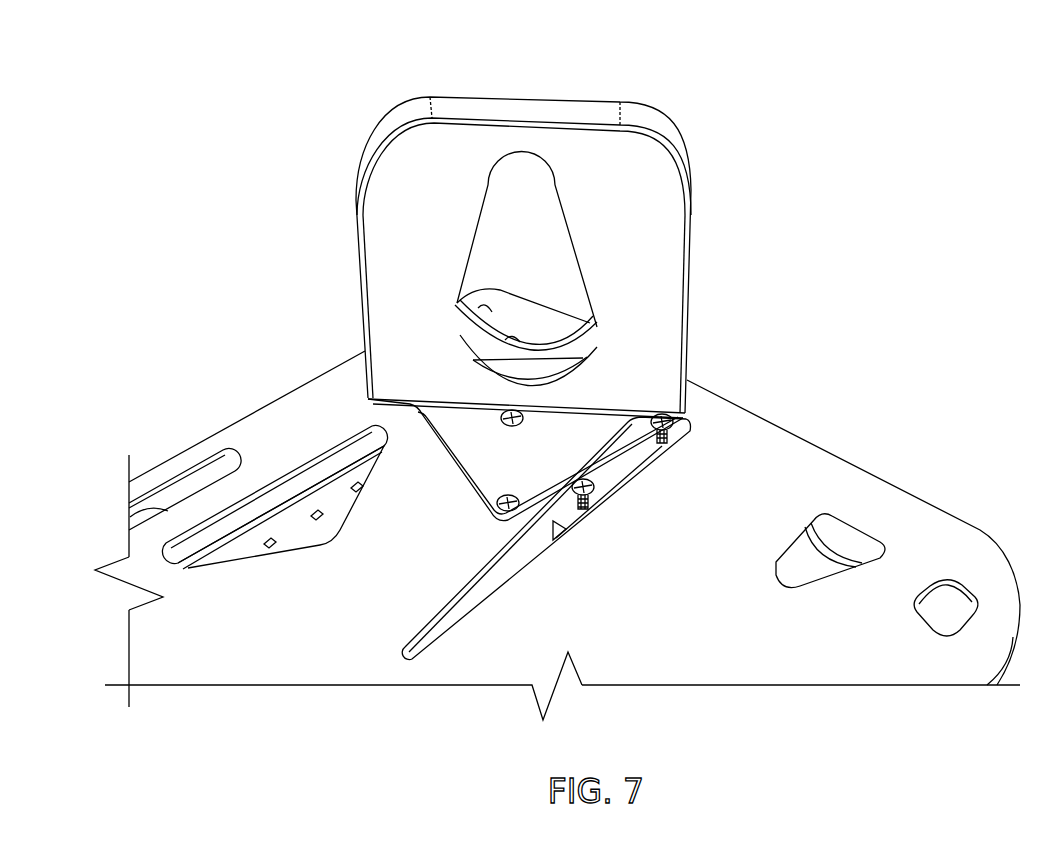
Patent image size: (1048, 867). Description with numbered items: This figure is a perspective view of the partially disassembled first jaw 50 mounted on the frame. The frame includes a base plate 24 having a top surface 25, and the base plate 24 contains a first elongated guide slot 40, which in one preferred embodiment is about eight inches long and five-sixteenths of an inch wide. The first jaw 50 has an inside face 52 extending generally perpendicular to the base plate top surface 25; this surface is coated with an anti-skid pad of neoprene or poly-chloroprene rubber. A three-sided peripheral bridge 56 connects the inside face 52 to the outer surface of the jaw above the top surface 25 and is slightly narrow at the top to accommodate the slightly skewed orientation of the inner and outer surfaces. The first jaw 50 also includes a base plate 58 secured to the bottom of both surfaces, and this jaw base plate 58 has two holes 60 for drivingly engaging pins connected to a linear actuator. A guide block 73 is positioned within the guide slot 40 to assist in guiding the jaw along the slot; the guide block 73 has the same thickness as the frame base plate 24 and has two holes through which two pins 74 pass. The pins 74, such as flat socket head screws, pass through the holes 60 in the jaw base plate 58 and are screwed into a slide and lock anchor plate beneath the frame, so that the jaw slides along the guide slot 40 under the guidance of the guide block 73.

The base plate 24 is at (885, 486).
The top surface 25 is at (249, 627).
The first elongated guide slot 40 is at (428, 620).
The first jaw 50 is at (510, 293).
The inside face 52 is at (377, 238).
The three-sided peripheral bridge 56 is at (606, 112).
The base plate 58 is at (460, 447).
The holes 60 is at (494, 420).
The guide block 73 is at (634, 458).
The pins 74 is at (597, 488).